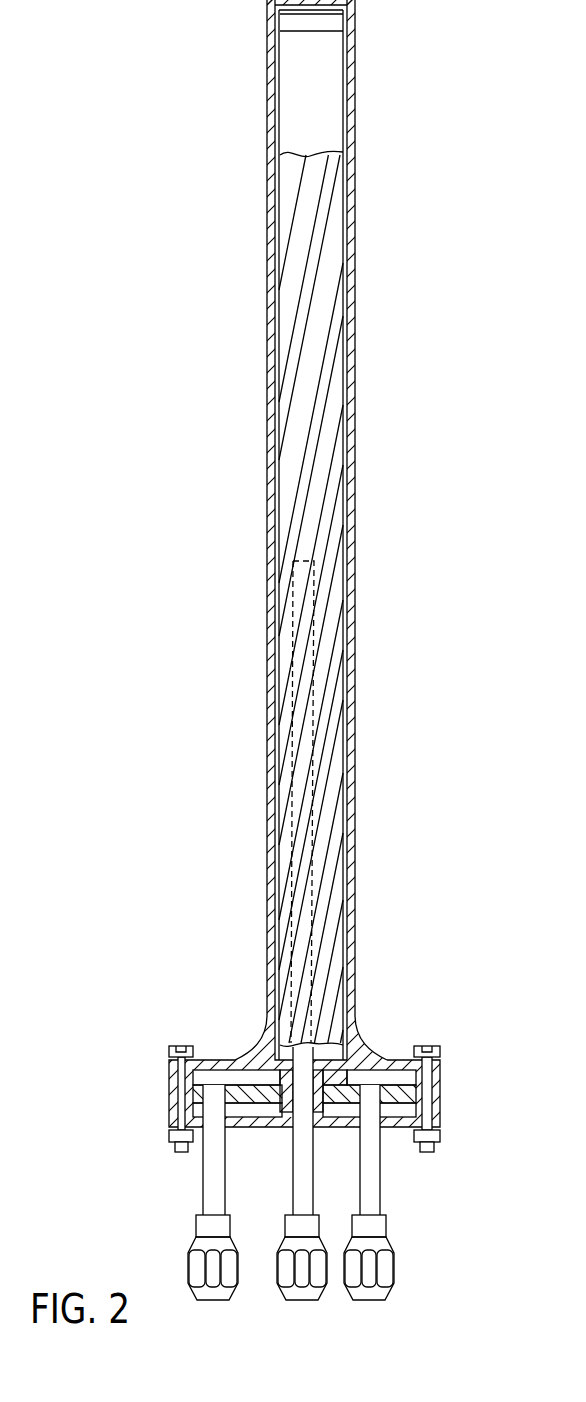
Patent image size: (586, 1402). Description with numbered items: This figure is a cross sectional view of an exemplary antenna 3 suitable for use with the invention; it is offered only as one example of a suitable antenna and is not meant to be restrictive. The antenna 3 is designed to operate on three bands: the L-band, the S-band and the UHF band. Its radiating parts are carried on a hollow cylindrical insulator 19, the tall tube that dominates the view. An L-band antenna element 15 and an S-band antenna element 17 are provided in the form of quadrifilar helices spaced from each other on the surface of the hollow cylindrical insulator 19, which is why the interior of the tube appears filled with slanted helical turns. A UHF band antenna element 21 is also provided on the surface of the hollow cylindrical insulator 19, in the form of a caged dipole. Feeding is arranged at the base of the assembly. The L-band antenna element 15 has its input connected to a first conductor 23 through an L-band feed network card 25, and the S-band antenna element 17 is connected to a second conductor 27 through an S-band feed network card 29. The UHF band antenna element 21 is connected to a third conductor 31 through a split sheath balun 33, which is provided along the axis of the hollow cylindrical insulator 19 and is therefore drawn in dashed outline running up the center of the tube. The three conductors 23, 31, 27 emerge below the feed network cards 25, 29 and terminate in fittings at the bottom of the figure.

The antenna 3 is at (318, 670).
The L-band antenna element 15 is at (318, 530).
The S-band antenna element 17 is at (322, 893).
The hollow cylindrical insulator 19 is at (351, 125).
The UHF band antenna element 21 is at (344, 298).
The first conductor 23 is at (220, 1295).
The L-band feed network card 25 is at (196, 1096).
The second conductor 27 is at (373, 1295).
The S-band feed network card 29 is at (418, 1106).
The third conductor 31 is at (306, 1295).
The split sheath balun 33 is at (292, 707).